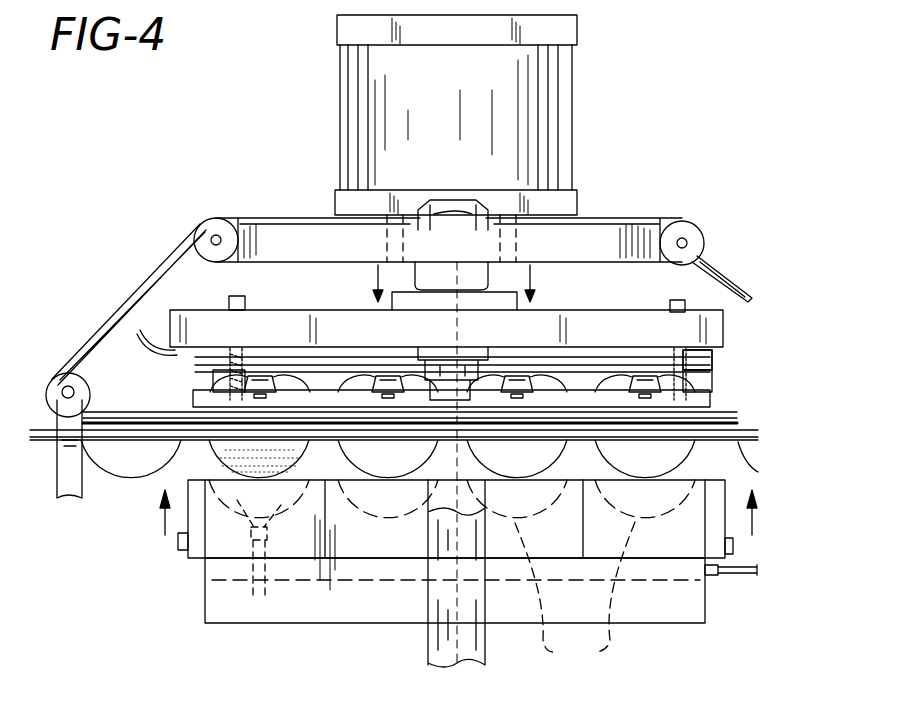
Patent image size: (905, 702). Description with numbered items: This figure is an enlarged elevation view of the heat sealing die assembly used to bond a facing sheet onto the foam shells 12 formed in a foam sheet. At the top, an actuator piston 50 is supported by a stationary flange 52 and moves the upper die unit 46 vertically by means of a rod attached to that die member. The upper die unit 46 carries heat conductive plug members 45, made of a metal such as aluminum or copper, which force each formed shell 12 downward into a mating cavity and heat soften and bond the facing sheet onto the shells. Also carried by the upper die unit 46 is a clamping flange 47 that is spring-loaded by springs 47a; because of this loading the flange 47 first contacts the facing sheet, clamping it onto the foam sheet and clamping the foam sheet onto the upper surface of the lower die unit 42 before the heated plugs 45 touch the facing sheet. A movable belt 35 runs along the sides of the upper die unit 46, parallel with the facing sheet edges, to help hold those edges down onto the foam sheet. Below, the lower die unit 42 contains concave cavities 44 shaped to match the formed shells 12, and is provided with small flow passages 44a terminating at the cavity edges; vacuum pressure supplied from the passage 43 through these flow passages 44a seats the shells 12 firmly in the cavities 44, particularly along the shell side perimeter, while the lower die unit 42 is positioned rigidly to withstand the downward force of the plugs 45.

The formed shells 12 is at (683, 452).
The movable belt 35 is at (168, 262).
The lower die unit 42 is at (668, 612).
The passage 43 is at (688, 572).
The concave cavities 44 is at (575, 594).
The small flow passages 44a is at (222, 555).
The plug member 45 is at (222, 380).
The upper die unit 46 is at (607, 322).
The clamping flange 47 is at (196, 400).
The springs 47a is at (706, 372).
The actuator piston 50 is at (533, 134).
The stationary flange 52 is at (626, 228).